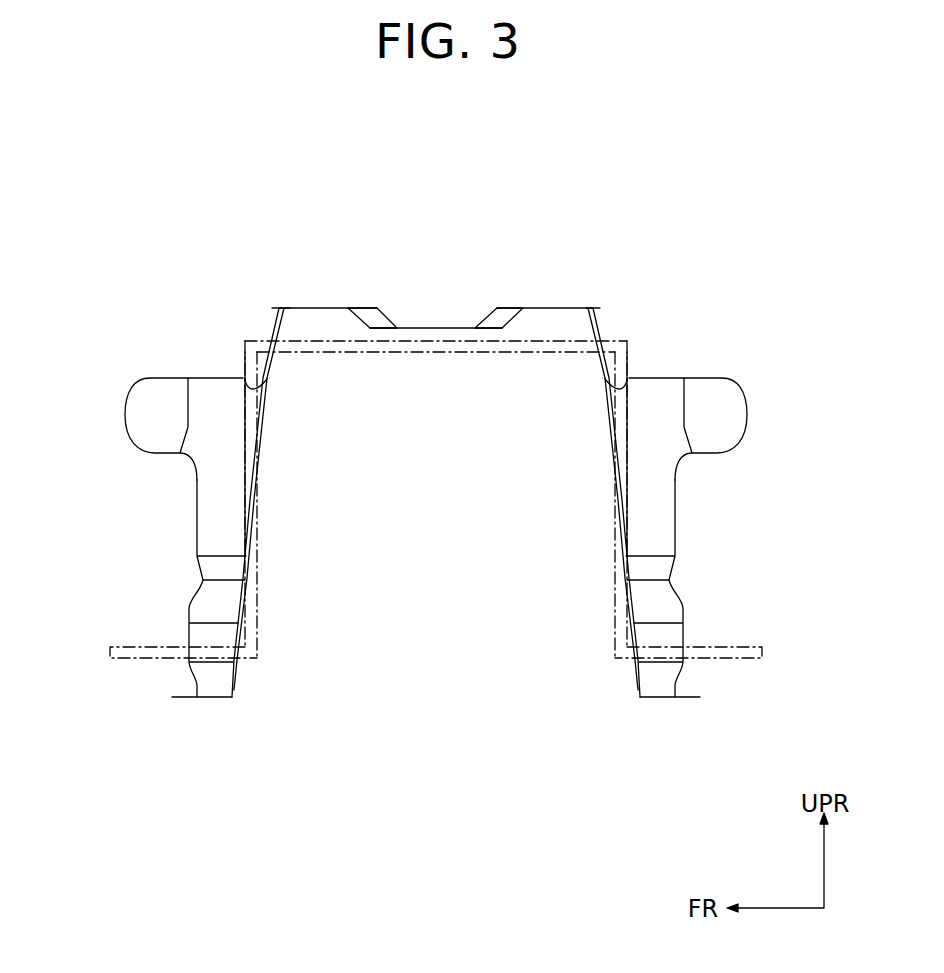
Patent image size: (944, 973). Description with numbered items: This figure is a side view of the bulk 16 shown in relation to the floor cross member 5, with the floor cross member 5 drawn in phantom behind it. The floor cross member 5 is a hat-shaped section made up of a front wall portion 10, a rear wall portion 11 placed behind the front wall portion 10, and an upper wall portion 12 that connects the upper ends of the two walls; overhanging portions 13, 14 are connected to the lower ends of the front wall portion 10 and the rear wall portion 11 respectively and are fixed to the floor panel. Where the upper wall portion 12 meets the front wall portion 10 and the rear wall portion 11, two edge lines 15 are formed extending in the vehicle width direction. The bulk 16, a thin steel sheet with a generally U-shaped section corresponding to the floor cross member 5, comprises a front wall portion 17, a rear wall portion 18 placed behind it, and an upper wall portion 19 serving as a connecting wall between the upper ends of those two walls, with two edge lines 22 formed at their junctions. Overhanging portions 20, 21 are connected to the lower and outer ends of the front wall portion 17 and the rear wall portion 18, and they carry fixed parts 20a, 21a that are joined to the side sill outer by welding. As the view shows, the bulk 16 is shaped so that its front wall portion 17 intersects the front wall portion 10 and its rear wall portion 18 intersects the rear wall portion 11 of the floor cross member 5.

The floor cross member 5 is at (443, 461).
The front wall portion 10 is at (262, 588).
The rear wall portion 11 is at (615, 585).
The upper wall portion 12 is at (433, 353).
The overhanging portion 13 is at (130, 640).
The overhanging portion 14 is at (742, 647).
The edge lines 15 is at (245, 340).
The bulk 16 is at (451, 452).
The front wall portion 17 is at (268, 395).
The rear wall portion 18 is at (608, 423).
The upper wall portion 19 is at (441, 327).
The overhanging portion 20 is at (146, 512).
The fixed part 20a is at (145, 408).
The overhanging portion 21 is at (725, 512).
The fixed part 21a is at (727, 408).
The edge lines 22 is at (281, 305).